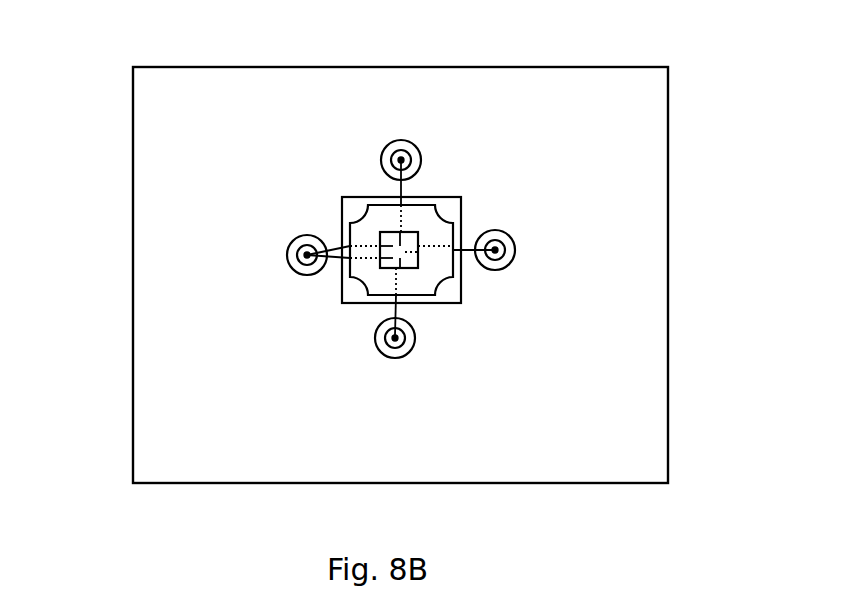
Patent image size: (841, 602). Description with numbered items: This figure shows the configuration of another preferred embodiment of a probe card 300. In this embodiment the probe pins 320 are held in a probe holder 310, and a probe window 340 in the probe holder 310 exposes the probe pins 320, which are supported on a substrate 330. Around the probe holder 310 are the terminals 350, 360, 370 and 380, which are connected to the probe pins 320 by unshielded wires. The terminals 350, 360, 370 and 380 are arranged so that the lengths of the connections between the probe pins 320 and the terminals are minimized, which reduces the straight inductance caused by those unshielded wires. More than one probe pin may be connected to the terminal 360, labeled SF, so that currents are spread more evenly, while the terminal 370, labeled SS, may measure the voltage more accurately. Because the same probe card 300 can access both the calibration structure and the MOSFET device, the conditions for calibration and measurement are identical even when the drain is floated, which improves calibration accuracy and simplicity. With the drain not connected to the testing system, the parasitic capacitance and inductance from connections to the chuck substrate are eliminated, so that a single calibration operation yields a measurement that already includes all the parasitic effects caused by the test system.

The probe card 300 is at (703, 132).
The probe holder 310 is at (458, 210).
The probe pins 320 is at (372, 245).
The substrate 330 is at (572, 138).
The probe window 340 is at (408, 255).
The terminal 350 is at (391, 127).
The terminal (SF) 360 is at (518, 265).
The terminal (SS) 370 is at (273, 260).
The terminal 380 is at (410, 368).